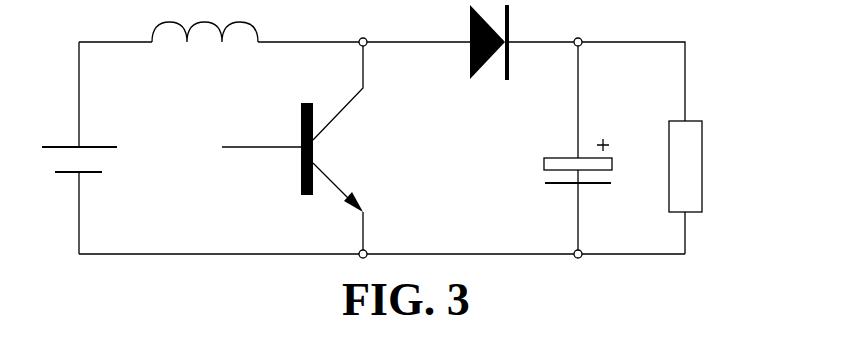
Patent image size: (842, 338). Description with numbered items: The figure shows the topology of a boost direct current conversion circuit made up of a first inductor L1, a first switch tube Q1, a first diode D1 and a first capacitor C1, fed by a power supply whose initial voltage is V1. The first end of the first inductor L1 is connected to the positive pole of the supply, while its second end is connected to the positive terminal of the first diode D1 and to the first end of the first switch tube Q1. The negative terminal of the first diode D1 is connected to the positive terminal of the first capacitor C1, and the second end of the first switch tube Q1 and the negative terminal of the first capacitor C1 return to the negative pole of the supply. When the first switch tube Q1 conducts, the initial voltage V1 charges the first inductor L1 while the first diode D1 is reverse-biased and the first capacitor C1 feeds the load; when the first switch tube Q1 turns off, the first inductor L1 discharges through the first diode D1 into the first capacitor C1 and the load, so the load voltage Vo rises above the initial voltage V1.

The first inductor L1 is at (205, 51).
The initial voltage V1 is at (95, 164).
The first switch tube Q1 is at (300, 148).
The first diode D1 is at (526, 61).
The first capacitor C1 is at (551, 152).
The voltage across two terminals of the load Vo is at (709, 166).